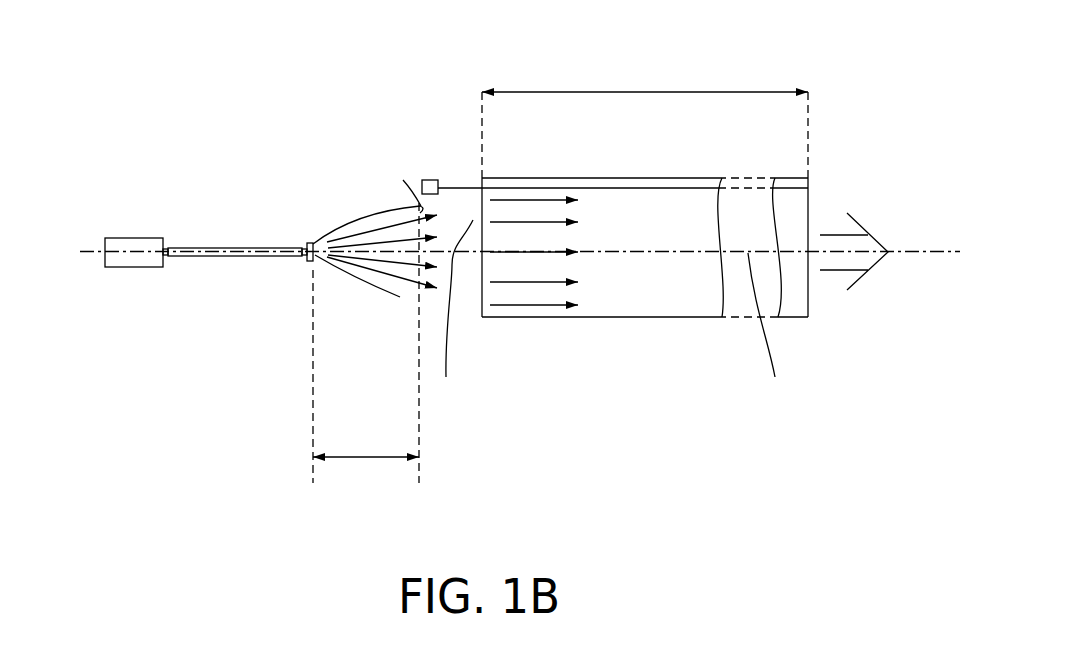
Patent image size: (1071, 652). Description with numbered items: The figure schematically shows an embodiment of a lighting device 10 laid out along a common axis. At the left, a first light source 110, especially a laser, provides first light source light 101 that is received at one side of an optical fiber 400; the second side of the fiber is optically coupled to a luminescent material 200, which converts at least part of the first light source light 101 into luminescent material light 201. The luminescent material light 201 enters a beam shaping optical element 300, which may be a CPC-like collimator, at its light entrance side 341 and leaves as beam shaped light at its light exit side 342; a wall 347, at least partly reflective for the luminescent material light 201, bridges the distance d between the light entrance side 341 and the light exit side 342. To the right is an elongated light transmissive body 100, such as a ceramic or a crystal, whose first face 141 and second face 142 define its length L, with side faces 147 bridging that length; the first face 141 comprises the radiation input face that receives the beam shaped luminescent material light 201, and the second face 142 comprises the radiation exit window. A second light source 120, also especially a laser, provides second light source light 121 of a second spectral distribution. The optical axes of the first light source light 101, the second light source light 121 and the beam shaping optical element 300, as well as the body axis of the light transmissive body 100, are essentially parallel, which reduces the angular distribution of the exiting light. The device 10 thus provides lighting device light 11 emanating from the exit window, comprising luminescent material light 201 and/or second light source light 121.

The lighting device 10 is at (131, 58).
The lighting device light 11 is at (305, 262).
The elongated light transmissive body 100 is at (698, 235).
The first light source light 101 is at (167, 243).
The first light source 110 is at (132, 282).
The second light source 120 is at (423, 180).
The second light source light 121 is at (477, 185).
The first face 141 is at (514, 277).
The second face 142 is at (870, 283).
The side face 147 is at (610, 178).
The luminescent material 200 is at (312, 246).
The luminescent material light 201 is at (358, 267).
The beam shaping optical element 300 is at (308, 190).
The light entrance side 341 is at (323, 270).
The light exit side 342 is at (436, 285).
The wall 347 is at (358, 221).
The optical fiber 400 is at (220, 182).